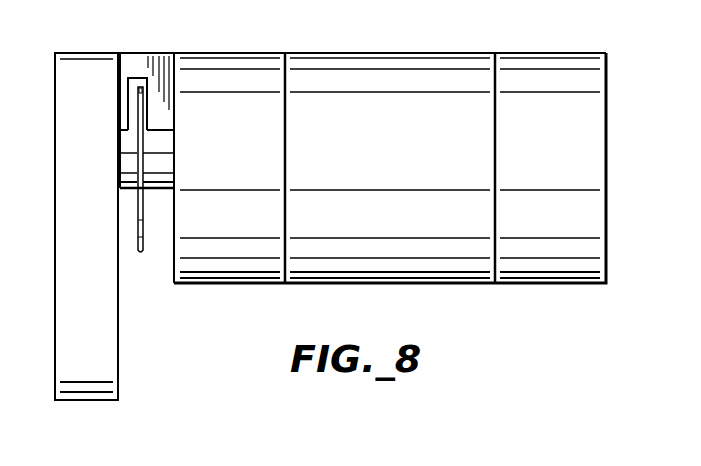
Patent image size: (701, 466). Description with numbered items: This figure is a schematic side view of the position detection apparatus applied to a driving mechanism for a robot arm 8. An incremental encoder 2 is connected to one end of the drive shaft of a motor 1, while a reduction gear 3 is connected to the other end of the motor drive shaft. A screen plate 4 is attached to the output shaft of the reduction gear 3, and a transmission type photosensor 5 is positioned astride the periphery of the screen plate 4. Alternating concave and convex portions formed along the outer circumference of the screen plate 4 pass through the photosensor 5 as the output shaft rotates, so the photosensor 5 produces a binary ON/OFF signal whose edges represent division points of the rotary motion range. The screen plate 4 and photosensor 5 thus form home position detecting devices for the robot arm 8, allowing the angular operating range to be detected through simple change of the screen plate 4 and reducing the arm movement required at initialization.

The motor 1 is at (383, 53).
The incremental encoder 2 is at (543, 53).
The reduction gear 3 is at (223, 53).
The screen plate 4 is at (141, 254).
The transmission type photosensor 5 is at (143, 53).
The robot arm 8 is at (78, 53).